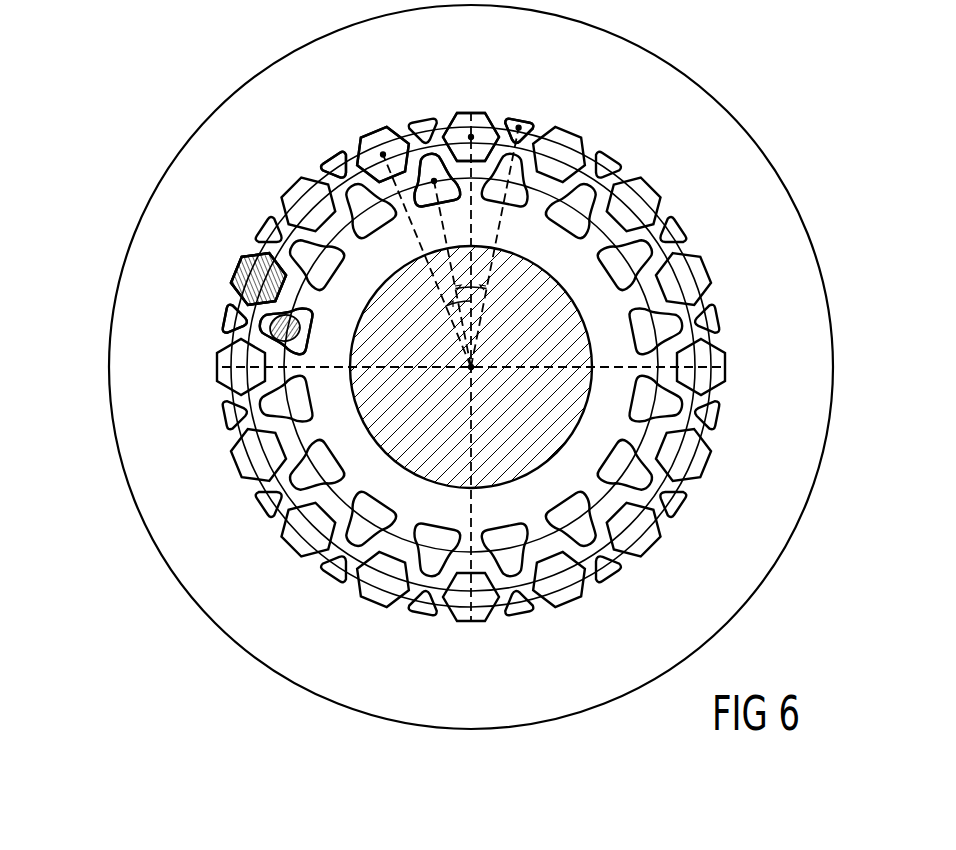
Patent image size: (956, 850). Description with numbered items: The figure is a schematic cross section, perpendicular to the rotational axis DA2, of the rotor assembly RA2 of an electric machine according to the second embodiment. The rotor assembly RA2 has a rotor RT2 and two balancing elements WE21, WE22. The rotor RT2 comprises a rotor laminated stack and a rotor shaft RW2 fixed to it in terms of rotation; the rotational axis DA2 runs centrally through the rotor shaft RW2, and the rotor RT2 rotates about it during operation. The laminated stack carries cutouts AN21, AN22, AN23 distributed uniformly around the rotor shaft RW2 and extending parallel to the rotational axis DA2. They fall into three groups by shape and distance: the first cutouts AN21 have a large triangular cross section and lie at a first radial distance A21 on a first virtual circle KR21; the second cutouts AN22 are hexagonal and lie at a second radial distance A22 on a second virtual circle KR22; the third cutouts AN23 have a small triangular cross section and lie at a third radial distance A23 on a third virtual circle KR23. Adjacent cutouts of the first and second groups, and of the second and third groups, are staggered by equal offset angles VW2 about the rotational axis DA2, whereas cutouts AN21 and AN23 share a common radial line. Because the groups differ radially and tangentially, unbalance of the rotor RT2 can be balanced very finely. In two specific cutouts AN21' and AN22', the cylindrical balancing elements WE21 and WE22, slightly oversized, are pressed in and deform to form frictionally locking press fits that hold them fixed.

The rotor assembly RA2 is at (815, 104).
The rotor RT2 is at (755, 568).
The rotor shaft RW2 is at (543, 440).
The rotational axis DA2 is at (472, 368).
The first virtual circle KR21 is at (720, 340).
The second virtual circle KR22 is at (720, 392).
The third virtual circle KR23 is at (712, 400).
The first cutouts AN21 is at (431, 115).
The second cutouts AN22 is at (442, 104).
The third cutouts AN23 is at (520, 125).
The first cutout receiving a balancing element AN21' is at (179, 340).
The second cutout receiving a balancing element AN22' is at (178, 243).
The first radial distance A21 is at (458, 225).
The second radial distance A22 is at (332, 180).
The third radial distance A23 is at (503, 220).
The offset angle VW2 is at (462, 320).
The balancing element WE21 is at (262, 335).
The balancing element WE22 is at (237, 270).